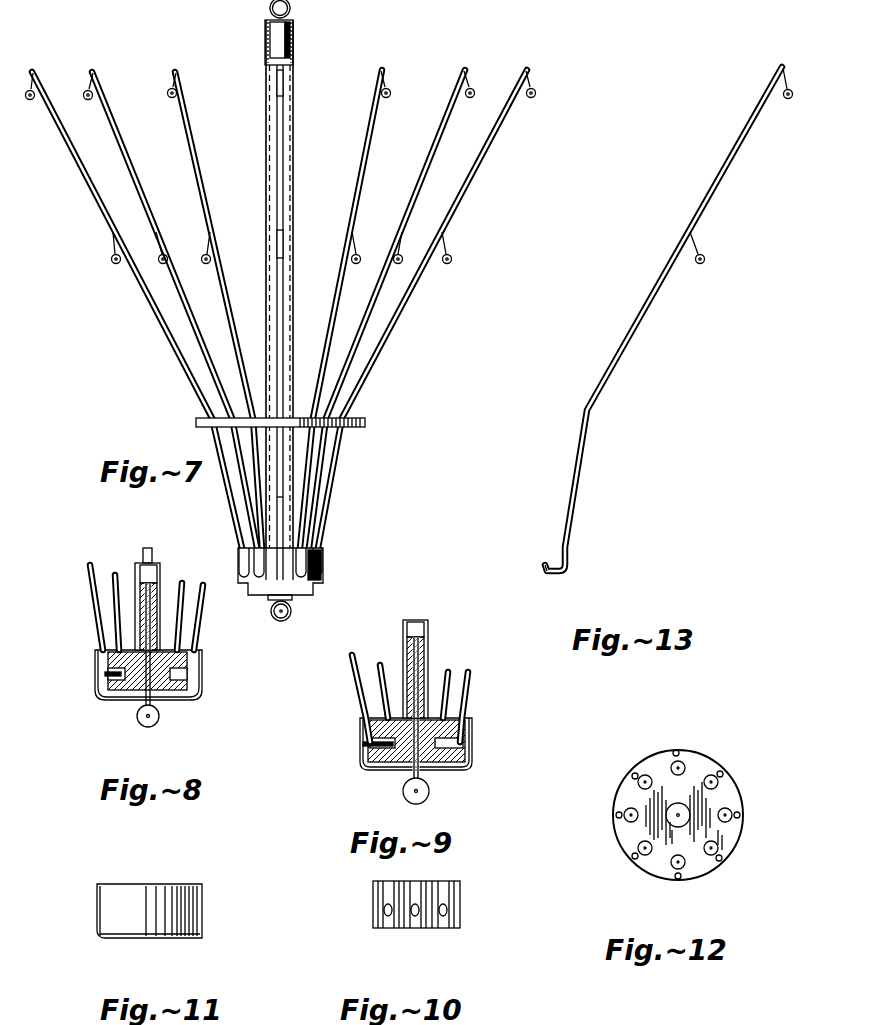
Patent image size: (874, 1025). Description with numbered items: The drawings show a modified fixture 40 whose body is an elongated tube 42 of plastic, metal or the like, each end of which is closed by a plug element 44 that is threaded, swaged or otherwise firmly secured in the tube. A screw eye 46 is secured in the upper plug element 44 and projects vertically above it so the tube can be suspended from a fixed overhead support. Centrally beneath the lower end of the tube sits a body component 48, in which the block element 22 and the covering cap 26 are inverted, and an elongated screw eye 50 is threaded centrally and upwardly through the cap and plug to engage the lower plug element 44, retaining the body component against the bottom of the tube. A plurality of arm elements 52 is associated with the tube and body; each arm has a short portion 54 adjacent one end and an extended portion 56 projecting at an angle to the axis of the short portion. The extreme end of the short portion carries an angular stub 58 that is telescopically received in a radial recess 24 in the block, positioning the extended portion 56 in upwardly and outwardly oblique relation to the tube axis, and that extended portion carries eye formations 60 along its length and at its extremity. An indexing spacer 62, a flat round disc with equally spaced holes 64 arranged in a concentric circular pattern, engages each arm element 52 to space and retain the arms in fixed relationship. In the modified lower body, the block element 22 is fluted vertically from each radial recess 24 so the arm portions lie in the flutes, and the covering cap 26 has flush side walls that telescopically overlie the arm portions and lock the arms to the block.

In FIG. 7, the modified fixture 40 is at (160, 350).
In FIG. 7, the elongated tube 42 is at (266, 128).
In FIG. 7, the plug element 44 is at (286, 42).
In FIG. 8, the plug element 44 is at (160, 592).
In FIG. 9, the plug element 44 is at (415, 669).
In FIG. 7, the screw eye 46 is at (292, 6).
In FIG. 7, the body component 48 is at (333, 569).
In FIG. 8, the body component 48 is at (93, 692).
In FIG. 7, the arm element 52 is at (190, 145).
In FIG. 9, the arm element 52 is at (462, 697).
In FIG. 13, the arm element 52 is at (585, 472).
In FIG. 13, the short portion 54 is at (572, 512).
In FIG. 13, the extended portion 56 is at (628, 352).
In FIG. 8, the angular stub 58 is at (106, 674).
In FIG. 9, the angular stub 58 is at (362, 762).
In FIG. 13, the angular stub 58 is at (548, 572).
In FIG. 7, the eye formation 60 is at (536, 96).
In FIG. 13, the eye formation 60 is at (790, 100).
In FIG. 7, the indexing spacer 62 is at (352, 418).
In FIG. 12, the indexing spacer 62 is at (692, 778).
In FIG. 12, the hole 64 is at (725, 810).
In FIG. 8, the block element 22 is at (183, 668).
In FIG. 9, the block element 22 is at (446, 770).
In FIG. 10, the block element 22 is at (460, 893).
In FIG. 8, the radial recess 24 is at (123, 700).
In FIG. 9, the radial recess 24 is at (395, 770).
In FIG. 10, the radial recess 24 is at (447, 910).
In FIG. 8, the covering cap 26 is at (202, 676).
In FIG. 9, the covering cap 26 is at (472, 748).
In FIG. 11, the covering cap 26 is at (202, 905).
In FIG. 8, the elongated screw eye 50 is at (183, 690).